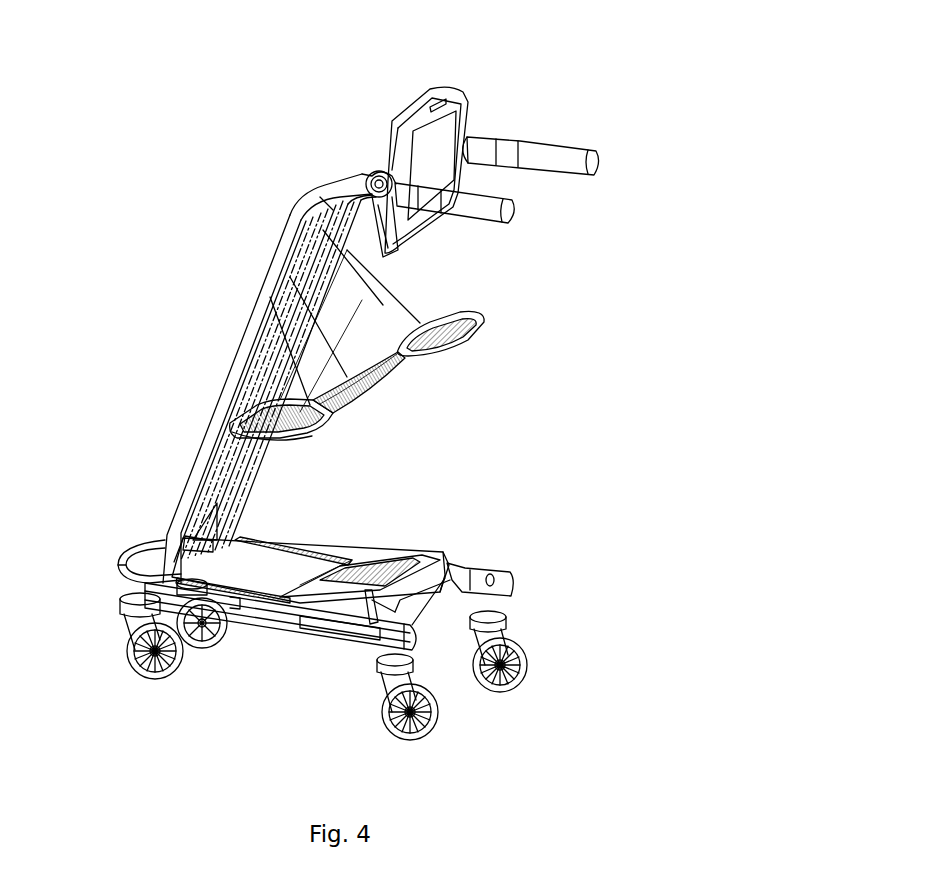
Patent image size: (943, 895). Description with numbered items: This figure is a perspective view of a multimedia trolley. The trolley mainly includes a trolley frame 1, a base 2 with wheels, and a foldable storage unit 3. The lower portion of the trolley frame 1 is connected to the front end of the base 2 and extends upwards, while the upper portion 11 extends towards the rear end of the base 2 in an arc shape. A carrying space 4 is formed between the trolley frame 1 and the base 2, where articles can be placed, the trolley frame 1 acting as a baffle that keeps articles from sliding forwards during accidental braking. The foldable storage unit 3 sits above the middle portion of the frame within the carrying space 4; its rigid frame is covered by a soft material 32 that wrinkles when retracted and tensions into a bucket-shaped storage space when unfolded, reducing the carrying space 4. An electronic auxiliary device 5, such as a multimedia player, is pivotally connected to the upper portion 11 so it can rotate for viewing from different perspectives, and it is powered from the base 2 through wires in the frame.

The trolley frame 1 is at (243, 323).
The upper portion 11 is at (345, 175).
The base 2 is at (150, 540).
The foldable storage unit 3 is at (380, 387).
The soft material 32 is at (407, 303).
The carrying space 4 is at (325, 500).
The electronic auxiliary device 5 is at (472, 98).